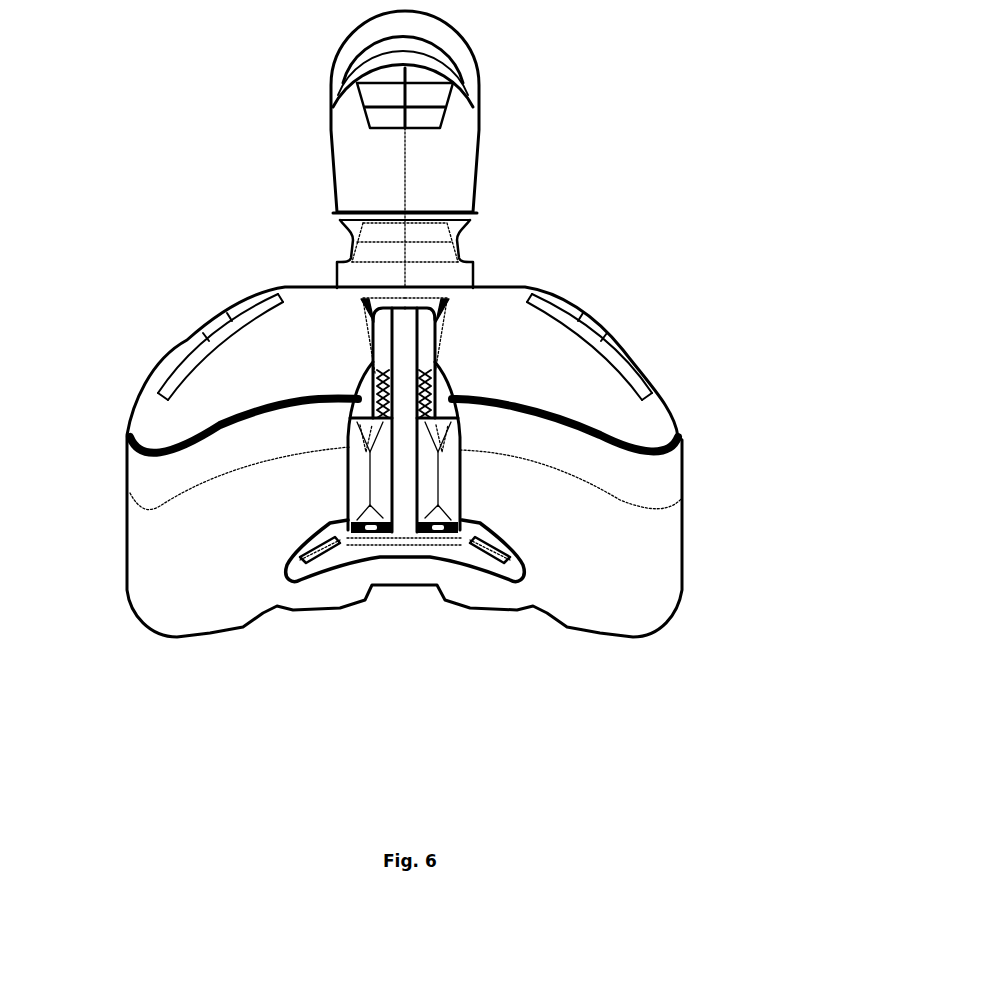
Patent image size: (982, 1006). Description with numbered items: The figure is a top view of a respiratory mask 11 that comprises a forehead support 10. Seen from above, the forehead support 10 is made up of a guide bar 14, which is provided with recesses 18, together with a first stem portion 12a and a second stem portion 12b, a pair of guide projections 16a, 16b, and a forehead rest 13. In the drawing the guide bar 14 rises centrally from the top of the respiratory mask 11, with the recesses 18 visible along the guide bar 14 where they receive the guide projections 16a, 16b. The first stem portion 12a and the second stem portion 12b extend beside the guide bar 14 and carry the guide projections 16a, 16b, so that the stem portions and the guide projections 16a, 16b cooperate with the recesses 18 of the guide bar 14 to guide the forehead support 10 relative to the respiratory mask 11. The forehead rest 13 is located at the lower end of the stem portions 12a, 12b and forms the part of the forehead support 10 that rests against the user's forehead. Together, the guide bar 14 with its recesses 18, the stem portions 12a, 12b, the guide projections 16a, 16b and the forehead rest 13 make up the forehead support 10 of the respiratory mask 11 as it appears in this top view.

The forehead support 10 is at (516, 164).
The respiratory mask 11 is at (622, 318).
The guide bar 14 is at (422, 332).
The recesses 18 is at (430, 373).
The guide projection 16a is at (420, 477).
The guide projection 16b is at (350, 462).
The first stem portion 12a is at (460, 478).
The second stem portion 12b is at (350, 472).
The forehead rest 13 is at (323, 567).